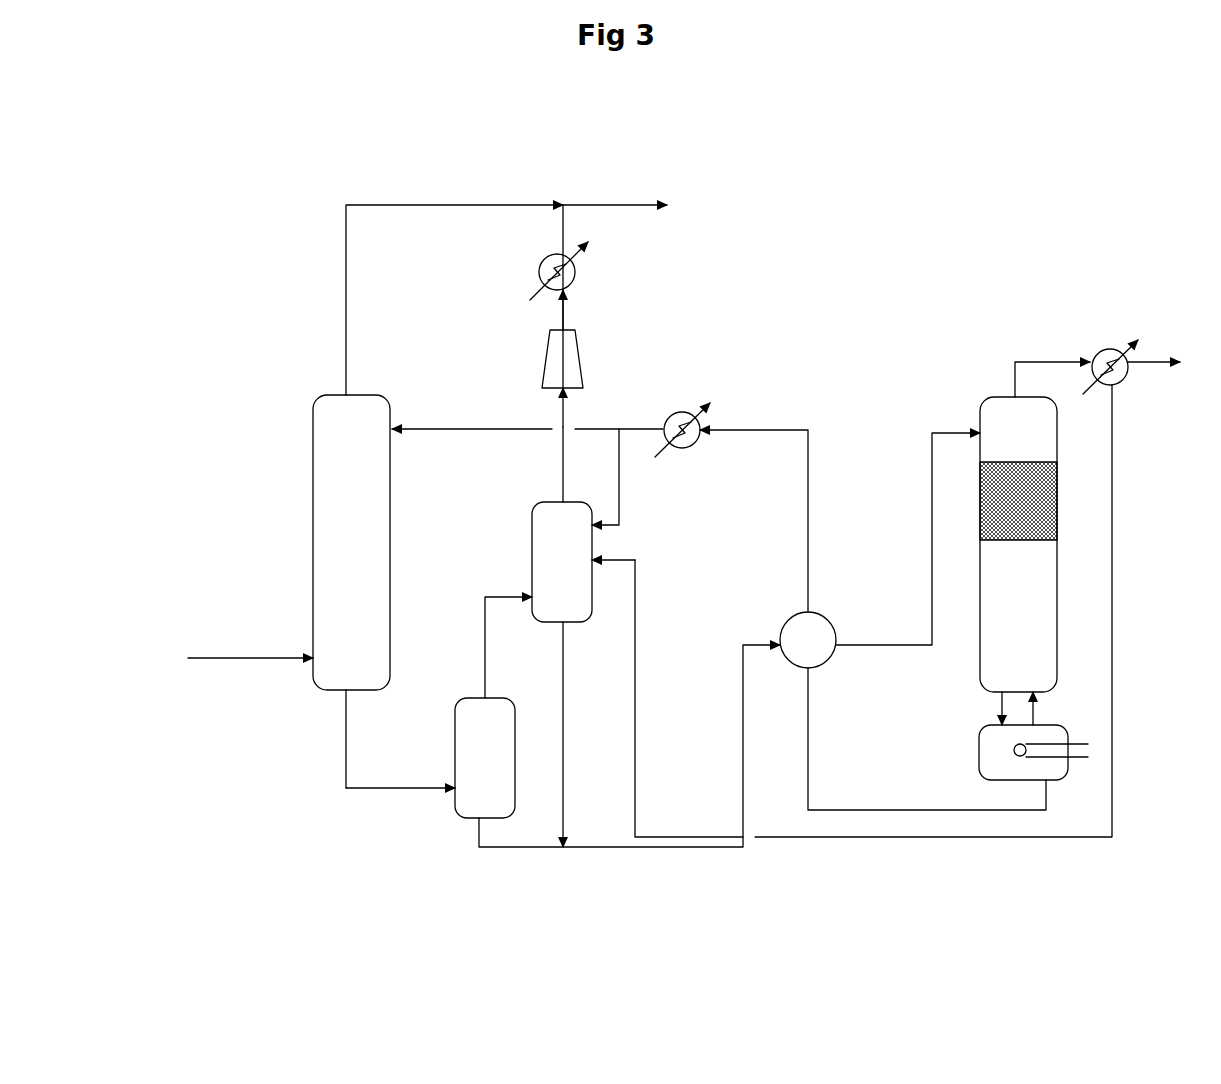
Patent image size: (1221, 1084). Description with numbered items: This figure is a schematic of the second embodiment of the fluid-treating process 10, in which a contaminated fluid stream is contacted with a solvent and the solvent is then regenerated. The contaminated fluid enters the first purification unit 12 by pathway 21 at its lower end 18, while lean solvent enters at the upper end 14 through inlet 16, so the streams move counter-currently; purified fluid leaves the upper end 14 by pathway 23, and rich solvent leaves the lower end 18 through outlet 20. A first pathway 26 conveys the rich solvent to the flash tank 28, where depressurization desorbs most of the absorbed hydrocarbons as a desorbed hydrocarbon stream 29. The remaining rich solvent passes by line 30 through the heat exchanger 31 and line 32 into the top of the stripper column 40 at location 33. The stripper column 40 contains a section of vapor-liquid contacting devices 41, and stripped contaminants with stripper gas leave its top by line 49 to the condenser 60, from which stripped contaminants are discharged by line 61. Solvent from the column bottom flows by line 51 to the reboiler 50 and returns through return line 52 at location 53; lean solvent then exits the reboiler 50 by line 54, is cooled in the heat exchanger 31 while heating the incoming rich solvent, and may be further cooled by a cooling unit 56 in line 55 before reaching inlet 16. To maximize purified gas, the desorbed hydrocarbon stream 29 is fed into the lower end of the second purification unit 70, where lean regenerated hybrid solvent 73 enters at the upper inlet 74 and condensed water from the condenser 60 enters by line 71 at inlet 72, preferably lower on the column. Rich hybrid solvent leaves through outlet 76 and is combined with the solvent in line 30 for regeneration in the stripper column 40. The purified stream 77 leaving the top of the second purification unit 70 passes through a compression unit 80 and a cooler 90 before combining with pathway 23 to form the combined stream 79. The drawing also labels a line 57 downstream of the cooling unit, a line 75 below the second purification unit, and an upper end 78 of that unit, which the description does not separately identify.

The process system 10 is at (734, 262).
The first purification unit 12 is at (318, 490).
The upper end 14 is at (340, 425).
The inlet 16 is at (395, 425).
The lower end 18 is at (352, 662).
The outlet 20 is at (346, 690).
The pathway 21 is at (193, 653).
The pathway 23 is at (347, 307).
The first pathway 26 is at (370, 790).
The flash tank 28 is at (472, 742).
The desorbed hydrocarbon stream 29 is at (485, 645).
The line 30 is at (605, 853).
The heat exchanger 31 is at (826, 617).
The line 32 is at (930, 552).
The location 33 is at (978, 435).
The stripper column 40 is at (1012, 415).
The vapor-liquid contacting device 41 is at (1022, 488).
The line 49 is at (1015, 360).
The reboiler 50 is at (1000, 752).
The line 51 is at (995, 700).
The return line 52 is at (1033, 712).
The location 53 is at (1035, 695).
The line 54 is at (893, 808).
The line 55 is at (805, 555).
The cooling unit 56 is at (668, 448).
The cooled recycle line 57 is at (412, 432).
The condenser 60 is at (1102, 350).
The line 61 is at (1147, 360).
The second purification unit 70 is at (558, 578).
The line 71 is at (668, 832).
The inlet 72 is at (595, 562).
The lean regenerated hybrid solvent 73 is at (620, 490).
The inlet 74 is at (600, 528).
The flash bottoms line 75 is at (570, 708).
The outlet 76 is at (560, 626).
The purified stream 77 is at (560, 458).
The flash vessel top 78 is at (560, 502).
The combined stream 79 is at (598, 204).
The compression unit 80 is at (563, 360).
The cooler 90 is at (575, 268).